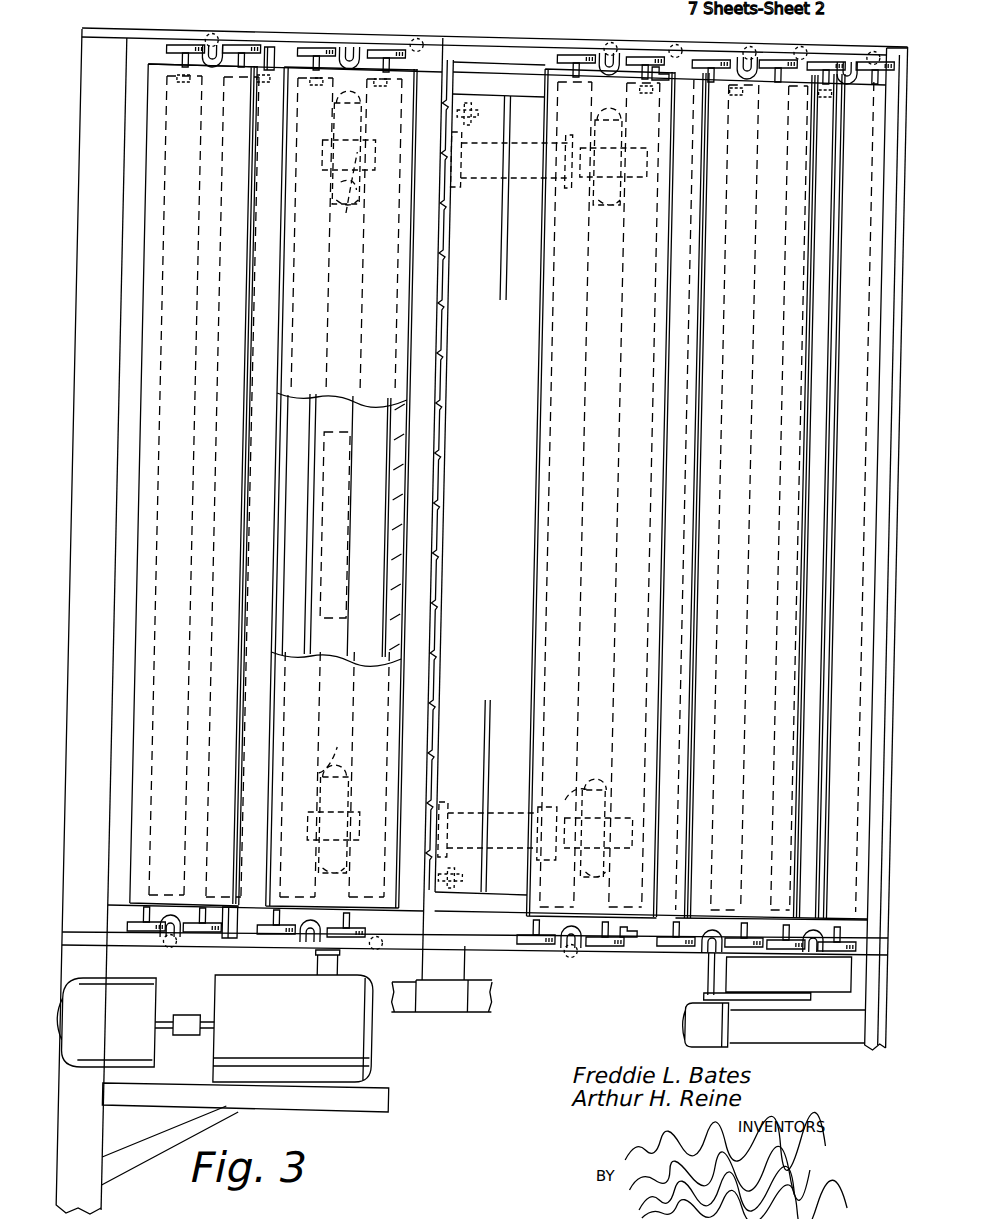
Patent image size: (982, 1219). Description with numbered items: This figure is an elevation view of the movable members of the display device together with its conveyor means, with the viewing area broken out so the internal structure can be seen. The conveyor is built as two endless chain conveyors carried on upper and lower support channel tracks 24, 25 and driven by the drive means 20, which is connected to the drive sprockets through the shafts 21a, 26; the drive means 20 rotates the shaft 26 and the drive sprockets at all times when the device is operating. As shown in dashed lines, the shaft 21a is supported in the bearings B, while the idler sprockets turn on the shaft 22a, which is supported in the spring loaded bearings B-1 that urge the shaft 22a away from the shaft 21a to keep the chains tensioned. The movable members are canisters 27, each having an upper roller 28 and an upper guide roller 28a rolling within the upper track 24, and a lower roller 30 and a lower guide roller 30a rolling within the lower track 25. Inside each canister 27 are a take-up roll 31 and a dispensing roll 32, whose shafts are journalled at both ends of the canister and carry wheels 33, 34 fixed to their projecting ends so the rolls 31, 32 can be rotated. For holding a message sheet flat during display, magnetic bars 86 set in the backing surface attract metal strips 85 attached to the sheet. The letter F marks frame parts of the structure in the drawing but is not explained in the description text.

The drive means 20 is at (390, 1035).
The shaft 21a is at (350, 213).
The shaft 22a is at (582, 800).
The upper support channel track 24 is at (116, 28).
The lower support channel track 25 is at (192, 947).
The shaft 26 is at (338, 963).
The canister 27 is at (410, 475).
The upper roller 28 is at (217, 42).
The upper guide roller 28a is at (423, 38).
The lower roller 30 is at (197, 933).
The lower guide roller 30a is at (666, 953).
The take-up roll 31 is at (393, 537).
The dispensing roll 32 is at (320, 573).
The wheel 33 is at (266, 48).
The wheel 34 is at (174, 43).
The metal strip 85 is at (470, 103).
The magnetic bar 86 is at (472, 123).
The bearing B is at (364, 176).
The spring loaded bearing B-1 is at (627, 183).
The frame member F is at (100, 462).